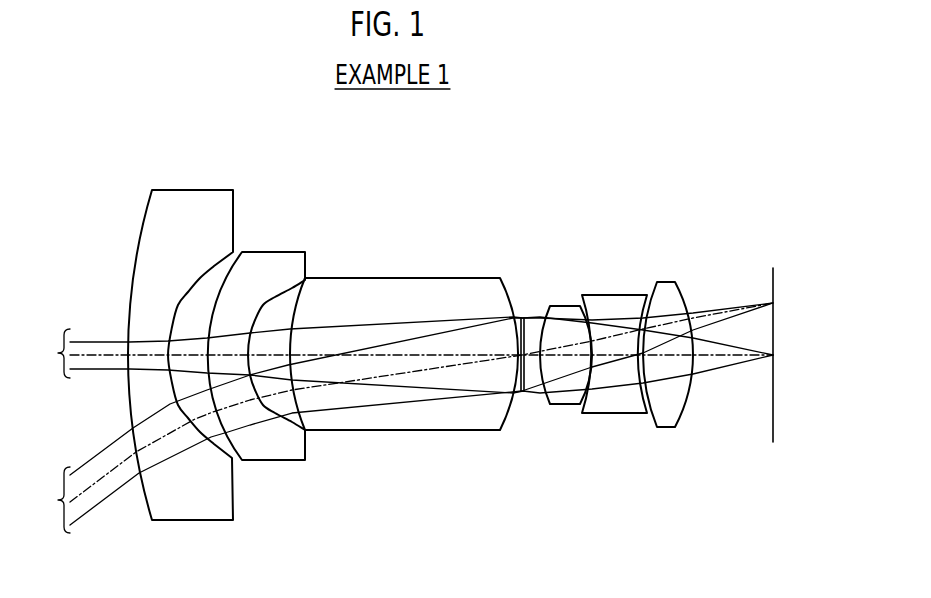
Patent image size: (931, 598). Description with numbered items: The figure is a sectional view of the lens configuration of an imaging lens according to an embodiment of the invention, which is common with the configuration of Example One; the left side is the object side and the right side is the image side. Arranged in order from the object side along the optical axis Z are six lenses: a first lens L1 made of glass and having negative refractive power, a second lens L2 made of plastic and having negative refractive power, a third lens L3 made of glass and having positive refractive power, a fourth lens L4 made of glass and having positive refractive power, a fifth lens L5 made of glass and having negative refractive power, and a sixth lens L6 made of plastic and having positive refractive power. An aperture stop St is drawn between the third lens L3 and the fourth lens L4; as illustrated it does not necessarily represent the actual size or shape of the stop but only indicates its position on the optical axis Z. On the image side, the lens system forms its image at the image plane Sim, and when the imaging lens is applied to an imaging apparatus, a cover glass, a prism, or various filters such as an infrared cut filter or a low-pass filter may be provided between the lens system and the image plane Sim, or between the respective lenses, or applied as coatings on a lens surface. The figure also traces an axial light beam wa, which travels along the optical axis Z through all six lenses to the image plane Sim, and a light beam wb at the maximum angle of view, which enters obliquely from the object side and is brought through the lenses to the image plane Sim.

The first lens L1 is at (195, 198).
The second lens L2 is at (277, 260).
The third lens L3 is at (383, 288).
The fourth lens L4 is at (565, 310).
The fifth lens L5 is at (613, 300).
The sixth lens L6 is at (667, 288).
The aperture stop St is at (525, 392).
The image plane Sim is at (773, 430).
The optical axis Z is at (90, 337).
The axial light beam wa is at (397, 355).
The light beam at a maximum angle of view wb is at (397, 418).